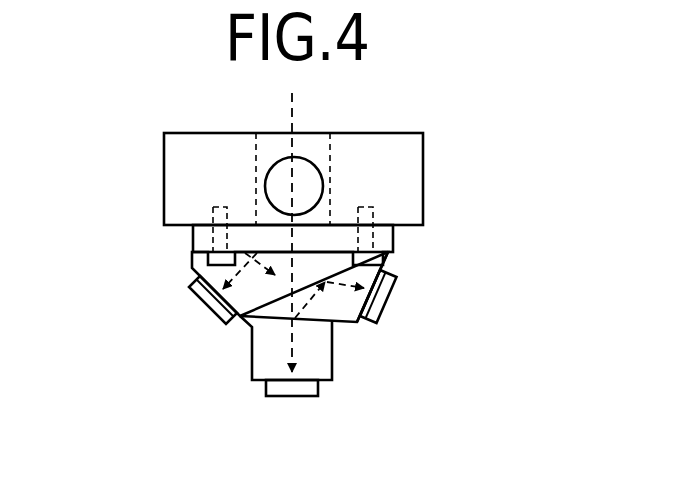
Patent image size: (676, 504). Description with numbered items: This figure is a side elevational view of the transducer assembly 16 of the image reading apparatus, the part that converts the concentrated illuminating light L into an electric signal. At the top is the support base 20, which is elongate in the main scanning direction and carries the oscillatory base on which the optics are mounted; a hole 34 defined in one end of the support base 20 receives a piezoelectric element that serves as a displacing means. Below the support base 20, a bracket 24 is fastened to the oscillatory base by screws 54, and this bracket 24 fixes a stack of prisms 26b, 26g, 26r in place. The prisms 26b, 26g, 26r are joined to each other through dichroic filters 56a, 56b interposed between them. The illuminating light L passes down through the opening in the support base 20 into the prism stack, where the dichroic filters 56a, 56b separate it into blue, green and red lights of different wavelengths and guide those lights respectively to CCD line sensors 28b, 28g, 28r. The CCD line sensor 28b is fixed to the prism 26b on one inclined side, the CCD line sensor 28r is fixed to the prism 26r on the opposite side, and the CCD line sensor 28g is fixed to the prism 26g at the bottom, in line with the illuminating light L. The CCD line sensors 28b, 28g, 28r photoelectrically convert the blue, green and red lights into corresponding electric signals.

The transducer assembly 16 is at (450, 139).
The support base 20 is at (390, 140).
The bracket 24 is at (388, 236).
The prism 26b is at (190, 275).
The prism 26r is at (358, 323).
The prism 26g is at (323, 353).
The CCD line sensor 28b is at (198, 305).
The CCD line sensor 28r is at (392, 300).
The CCD line sensor 28g is at (307, 387).
The hole 34 is at (278, 158).
The screws 54 is at (218, 258).
The dichroic filter 56a is at (392, 285).
The dichroic filter 56b is at (262, 322).
The illuminating light L is at (295, 110).